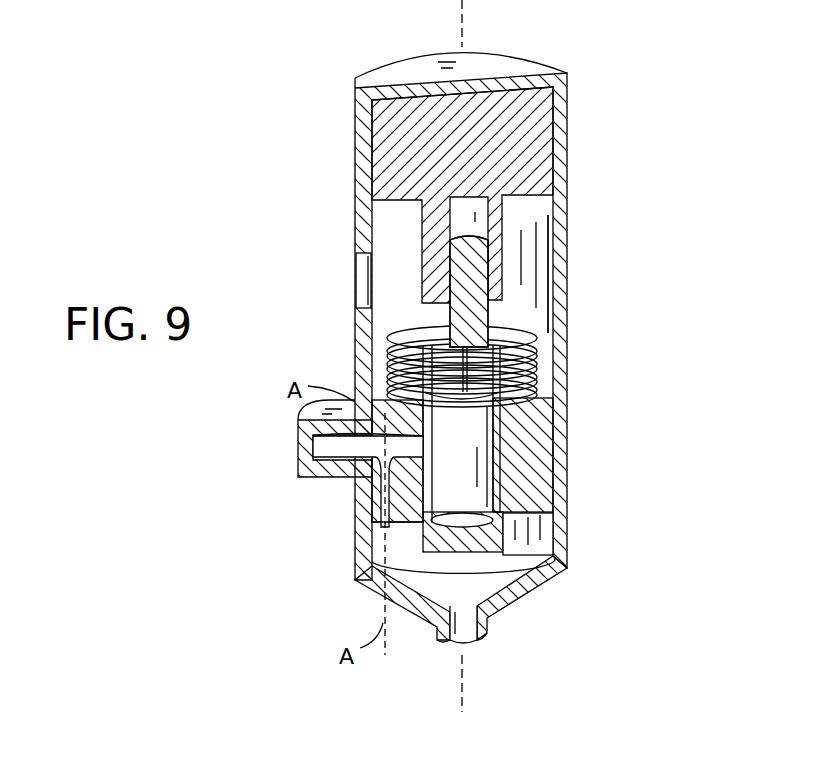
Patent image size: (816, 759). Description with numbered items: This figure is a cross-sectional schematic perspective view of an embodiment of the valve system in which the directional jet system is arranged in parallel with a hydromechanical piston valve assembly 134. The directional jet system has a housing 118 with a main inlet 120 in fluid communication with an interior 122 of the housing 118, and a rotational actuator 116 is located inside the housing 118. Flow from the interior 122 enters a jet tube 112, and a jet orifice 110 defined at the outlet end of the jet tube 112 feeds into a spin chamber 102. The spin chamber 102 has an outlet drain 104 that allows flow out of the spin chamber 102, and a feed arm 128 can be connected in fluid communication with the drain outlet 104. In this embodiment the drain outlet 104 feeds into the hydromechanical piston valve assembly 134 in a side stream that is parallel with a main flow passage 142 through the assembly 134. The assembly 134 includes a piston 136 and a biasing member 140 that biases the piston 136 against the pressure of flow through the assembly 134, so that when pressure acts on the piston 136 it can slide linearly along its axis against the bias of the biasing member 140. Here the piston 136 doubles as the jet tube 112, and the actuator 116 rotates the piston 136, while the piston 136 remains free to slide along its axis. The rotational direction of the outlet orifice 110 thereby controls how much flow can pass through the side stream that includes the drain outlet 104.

The spin chamber 102 is at (300, 452).
The outlet drain 104 is at (368, 470).
The jet orifice 110 is at (438, 434).
The jet tube 112 is at (510, 447).
The rotational actuator 116 is at (540, 132).
The housing 118 is at (528, 263).
The main inlet 120 is at (340, 268).
The interior of the housing 122 is at (528, 269).
The feed arm 128 is at (487, 624).
The hydromechanical piston valve assembly 134 is at (598, 355).
The piston 136 is at (540, 567).
The biasing member 140 is at (540, 382).
The main flow passage 142 is at (417, 574).